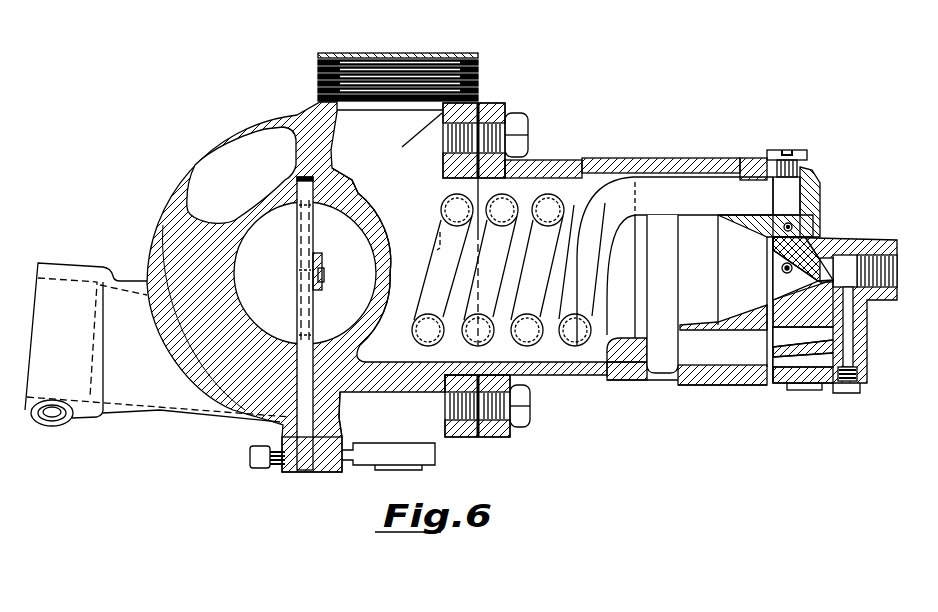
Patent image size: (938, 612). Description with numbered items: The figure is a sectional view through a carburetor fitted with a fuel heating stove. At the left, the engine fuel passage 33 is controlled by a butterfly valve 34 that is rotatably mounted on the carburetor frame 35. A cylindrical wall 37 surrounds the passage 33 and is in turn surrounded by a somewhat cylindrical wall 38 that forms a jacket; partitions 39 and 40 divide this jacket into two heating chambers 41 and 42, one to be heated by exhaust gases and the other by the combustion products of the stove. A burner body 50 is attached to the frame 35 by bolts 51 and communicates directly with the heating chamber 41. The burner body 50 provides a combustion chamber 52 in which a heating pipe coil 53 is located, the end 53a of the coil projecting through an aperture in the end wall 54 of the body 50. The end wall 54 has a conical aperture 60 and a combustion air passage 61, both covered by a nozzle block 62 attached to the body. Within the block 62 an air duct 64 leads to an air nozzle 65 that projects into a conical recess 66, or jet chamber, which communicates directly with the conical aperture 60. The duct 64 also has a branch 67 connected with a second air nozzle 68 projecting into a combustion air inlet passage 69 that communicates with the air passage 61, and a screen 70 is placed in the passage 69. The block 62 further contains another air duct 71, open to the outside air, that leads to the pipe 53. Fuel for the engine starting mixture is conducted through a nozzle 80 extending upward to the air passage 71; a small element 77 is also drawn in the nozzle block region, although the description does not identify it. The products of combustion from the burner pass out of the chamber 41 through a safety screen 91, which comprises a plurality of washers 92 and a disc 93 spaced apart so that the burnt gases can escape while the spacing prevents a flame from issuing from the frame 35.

The engine fuel passage 33 is at (350, 293).
The butterfly valve 34 is at (308, 229).
The carburetor frame 35 is at (443, 108).
The cylindrical wall 37 is at (320, 203).
The cylindrical wall 38 is at (213, 152).
The partition 39 is at (322, 372).
The partition 40 is at (311, 151).
The chamber 41 is at (493, 101).
The chamber 42 is at (230, 180).
The burner body 50 is at (537, 221).
The bolts 51 is at (527, 128).
The combustion chamber 52 is at (573, 200).
The heating pipe coil 53 is at (592, 300).
The end of pipe coil 53a is at (757, 198).
The end wall 54 is at (740, 157).
The conical aperture 60 is at (747, 263).
The combustion air passage 61 is at (725, 345).
The nozzle block 62 is at (820, 200).
The air duct 64 is at (847, 270).
The air nozzle 65 is at (830, 257).
The conical recess 66 is at (783, 285).
The branch 67 is at (850, 323).
The air nozzle 68 is at (792, 370).
The combustion air inlet passage 69 is at (783, 388).
The screen 70 is at (813, 388).
The air duct 71 is at (783, 190).
The pivot pin 77 is at (779, 248).
The nozzle 80 is at (780, 233).
The safety screen 91 is at (365, 57).
The washers 92 is at (318, 78).
The disc 93 is at (396, 52).